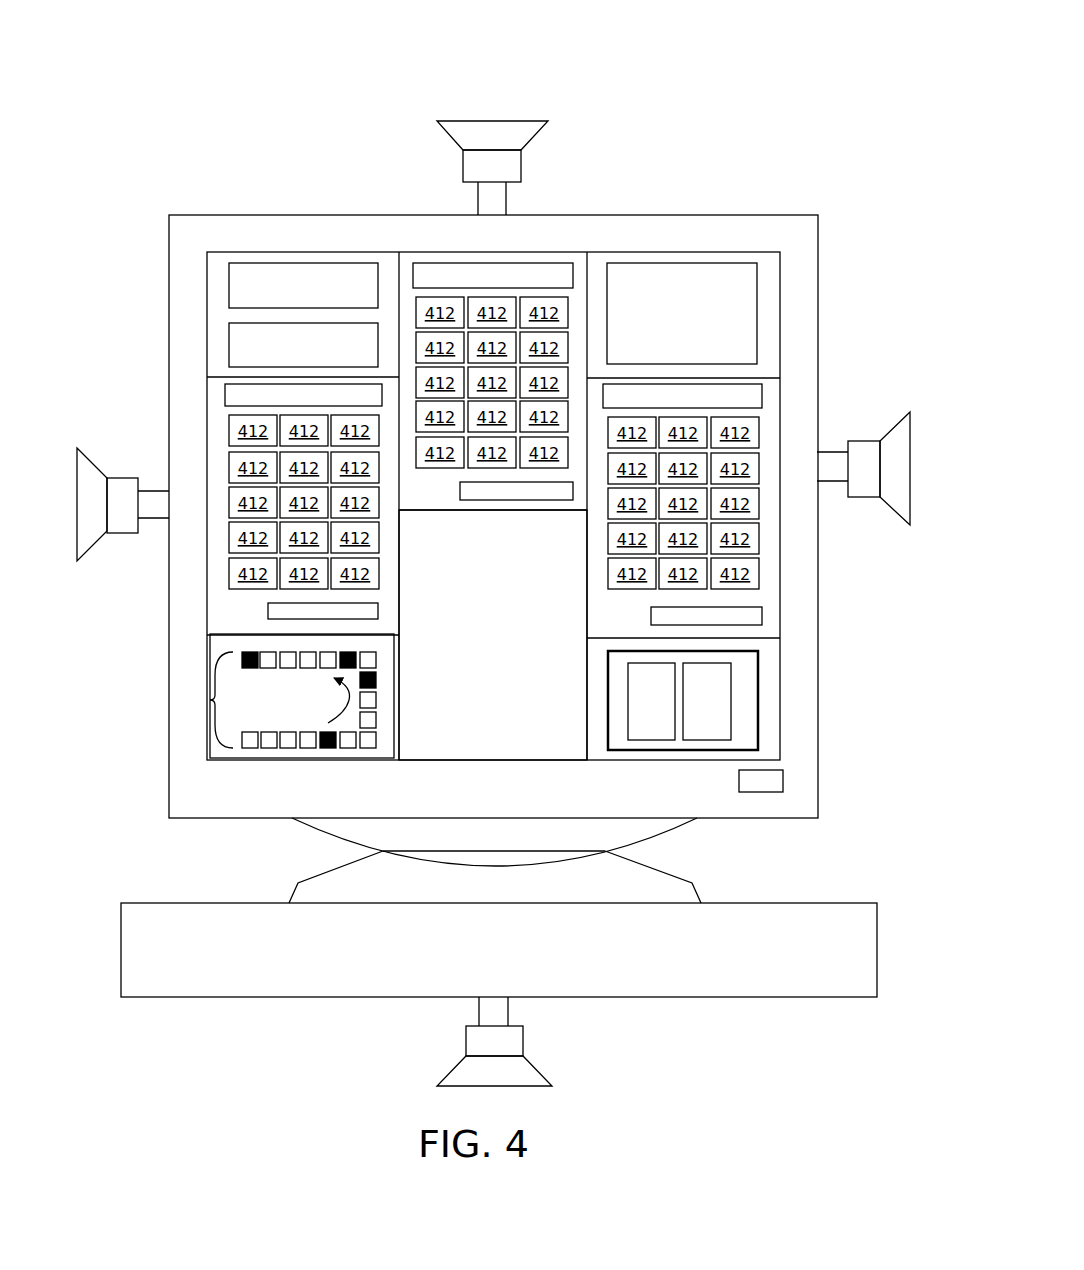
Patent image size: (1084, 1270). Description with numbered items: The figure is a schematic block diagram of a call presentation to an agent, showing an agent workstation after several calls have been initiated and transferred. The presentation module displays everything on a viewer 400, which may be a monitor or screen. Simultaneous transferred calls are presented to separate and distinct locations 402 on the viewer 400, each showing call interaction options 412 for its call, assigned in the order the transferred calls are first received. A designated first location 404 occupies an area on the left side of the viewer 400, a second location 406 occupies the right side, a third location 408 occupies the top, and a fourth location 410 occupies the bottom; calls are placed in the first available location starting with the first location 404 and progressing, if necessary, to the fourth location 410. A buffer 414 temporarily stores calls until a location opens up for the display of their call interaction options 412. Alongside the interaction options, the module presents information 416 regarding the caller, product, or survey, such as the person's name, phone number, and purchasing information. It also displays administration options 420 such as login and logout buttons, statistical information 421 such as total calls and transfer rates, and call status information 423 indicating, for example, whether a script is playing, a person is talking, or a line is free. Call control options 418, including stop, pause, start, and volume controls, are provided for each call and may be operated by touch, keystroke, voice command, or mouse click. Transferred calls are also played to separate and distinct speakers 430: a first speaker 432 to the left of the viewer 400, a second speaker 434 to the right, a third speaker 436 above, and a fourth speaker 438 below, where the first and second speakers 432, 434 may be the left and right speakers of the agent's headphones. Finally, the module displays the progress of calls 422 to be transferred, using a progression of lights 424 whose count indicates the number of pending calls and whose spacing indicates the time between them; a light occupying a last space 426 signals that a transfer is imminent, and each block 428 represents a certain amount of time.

The viewer 400 is at (186, 109).
The locations 402 is at (479, 482).
The first location 404 is at (210, 421).
The second location 406 is at (768, 402).
The third location 408 is at (408, 296).
The fourth location 410 is at (506, 702).
The call interaction options 412 is at (479, 409).
The buffer 414 is at (653, 740).
The information 416 is at (223, 375).
The call control options 418 is at (228, 623).
The administration options 420 is at (278, 263).
The statistical information 421 is at (230, 310).
The progress of calls 422 is at (212, 700).
The call status information 423 is at (722, 263).
The progression of lights 424 is at (362, 652).
The last space 426 is at (278, 697).
The block 428 is at (327, 749).
The speakers 430 is at (506, 590).
The first speaker 432 is at (120, 534).
The second speaker 434 is at (858, 497).
The third speaker 436 is at (437, 121).
The fourth speaker 438 is at (523, 1042).